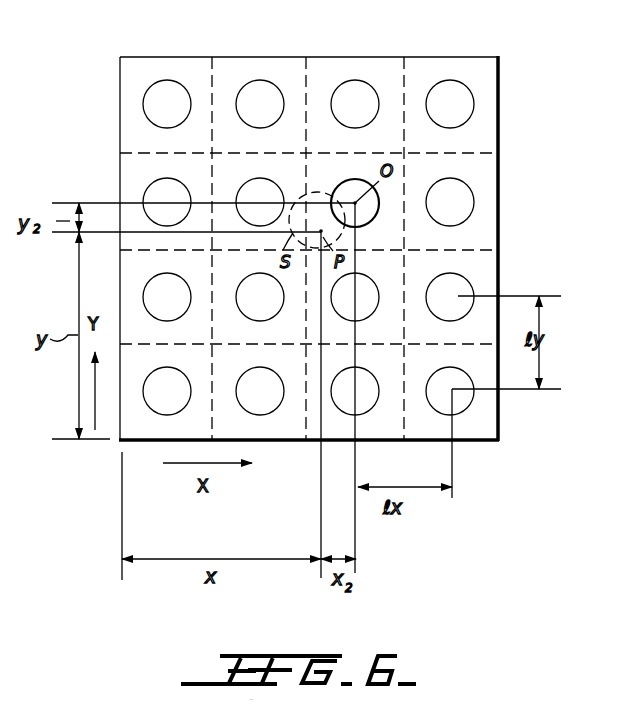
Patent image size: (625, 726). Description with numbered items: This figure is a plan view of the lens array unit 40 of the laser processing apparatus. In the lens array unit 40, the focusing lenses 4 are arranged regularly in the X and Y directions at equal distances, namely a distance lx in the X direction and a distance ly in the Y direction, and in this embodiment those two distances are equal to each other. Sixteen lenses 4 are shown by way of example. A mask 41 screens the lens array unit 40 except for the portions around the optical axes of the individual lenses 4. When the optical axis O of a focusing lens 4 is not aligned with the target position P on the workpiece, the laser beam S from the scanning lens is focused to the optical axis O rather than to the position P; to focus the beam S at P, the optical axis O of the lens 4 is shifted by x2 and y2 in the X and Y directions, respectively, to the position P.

The lens array unit 40 is at (351, 62).
The mask 41 is at (171, 66).
The focusing lens 4 is at (346, 179).